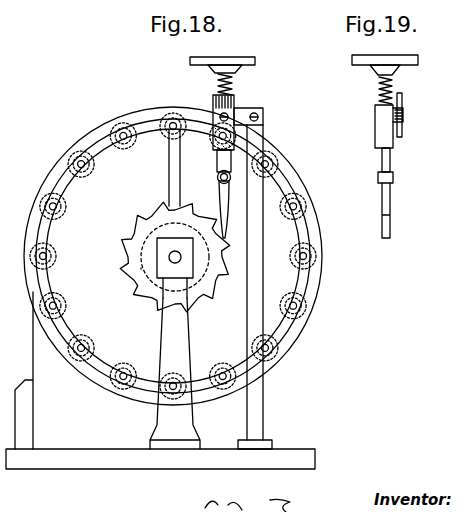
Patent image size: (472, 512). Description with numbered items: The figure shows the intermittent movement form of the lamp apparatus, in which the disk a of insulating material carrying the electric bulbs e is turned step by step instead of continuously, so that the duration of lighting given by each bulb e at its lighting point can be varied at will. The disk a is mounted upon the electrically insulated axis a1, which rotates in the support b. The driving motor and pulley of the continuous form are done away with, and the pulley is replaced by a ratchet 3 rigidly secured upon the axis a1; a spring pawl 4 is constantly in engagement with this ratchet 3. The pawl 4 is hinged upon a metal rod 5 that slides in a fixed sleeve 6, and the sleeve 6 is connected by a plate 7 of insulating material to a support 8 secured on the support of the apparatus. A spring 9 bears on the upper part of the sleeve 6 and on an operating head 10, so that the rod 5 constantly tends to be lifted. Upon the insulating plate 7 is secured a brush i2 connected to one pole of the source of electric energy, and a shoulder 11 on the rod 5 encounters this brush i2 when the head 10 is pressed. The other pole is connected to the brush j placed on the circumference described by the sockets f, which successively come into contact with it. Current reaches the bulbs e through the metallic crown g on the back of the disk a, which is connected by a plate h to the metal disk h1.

In FIG. 18, the disk a is at (66, 170).
In FIG. 18, the axis a1 is at (171, 253).
In FIG. 18, the support b is at (175, 373).
In FIG. 18, the electric bulb e is at (126, 150).
In FIG. 18, the socket f is at (58, 296).
In FIG. 18, the metallic crown g is at (51, 233).
In FIG. 18, the plate h is at (172, 166).
In FIG. 18, the metal disk h1 is at (140, 268).
In FIG. 18, the brush i2 is at (213, 99).
In FIG. 19, the brush i2 is at (403, 101).
In FIG. 18, the brush j is at (32, 338).
In FIG. 18, the ratchet 3 is at (133, 290).
In FIG. 18, the spring pawl 4 is at (224, 197).
In FIG. 19, the spring pawl 4 is at (390, 228).
In FIG. 18, the metal rod 5 is at (218, 160).
In FIG. 19, the metal rod 5 is at (382, 157).
In FIG. 18, the fixed sleeve 6 is at (213, 140).
In FIG. 19, the fixed sleeve 6 is at (383, 129).
In FIG. 18, the plate 7 is at (241, 116).
In FIG. 19, the plate 7 is at (399, 124).
In FIG. 18, the support 8 is at (258, 415).
In FIG. 18, the spring 9 is at (233, 89).
In FIG. 19, the spring 9 is at (379, 92).
In FIG. 19, the operating head 10 is at (356, 62).
In FIG. 19, the shoulder 11 is at (396, 70).